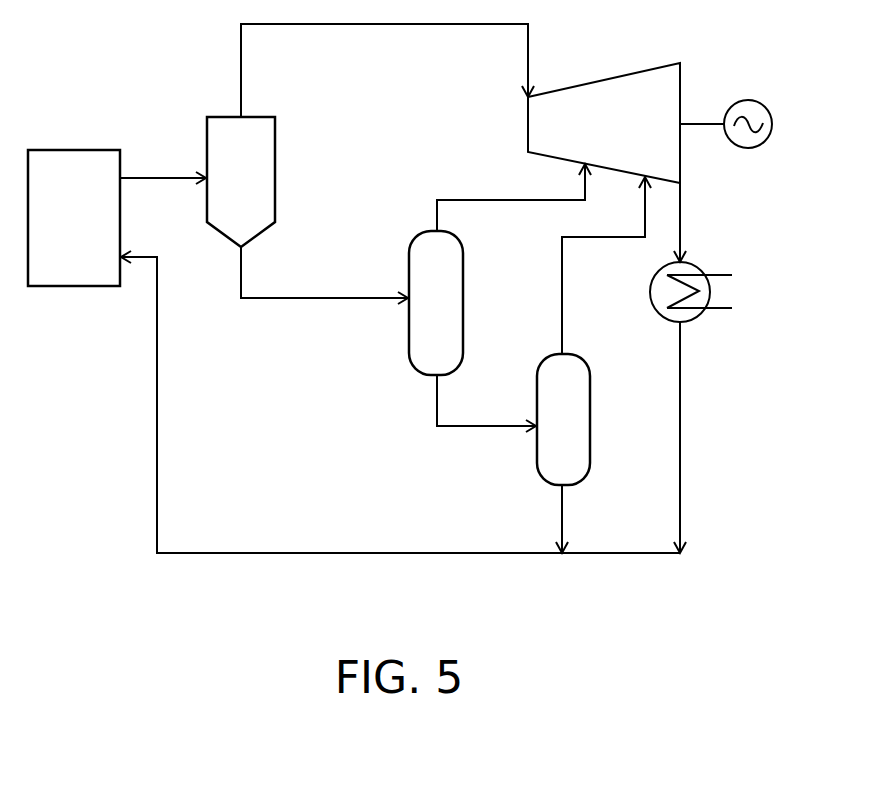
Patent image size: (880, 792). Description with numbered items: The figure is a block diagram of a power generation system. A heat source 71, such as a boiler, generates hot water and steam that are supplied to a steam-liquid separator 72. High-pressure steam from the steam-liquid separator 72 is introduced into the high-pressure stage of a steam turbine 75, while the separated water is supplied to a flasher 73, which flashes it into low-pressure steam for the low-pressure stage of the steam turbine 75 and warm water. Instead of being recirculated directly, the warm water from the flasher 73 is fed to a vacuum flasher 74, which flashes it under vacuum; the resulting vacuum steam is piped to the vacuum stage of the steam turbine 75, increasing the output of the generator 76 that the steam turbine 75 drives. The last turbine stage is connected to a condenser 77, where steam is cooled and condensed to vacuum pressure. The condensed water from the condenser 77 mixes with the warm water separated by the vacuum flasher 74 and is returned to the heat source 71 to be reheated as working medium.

The heat source 71 is at (70, 150).
The steam-liquid separator 72 is at (276, 143).
The flasher 73 is at (409, 335).
The vacuum flasher 74 is at (590, 404).
The steam turbine 75 is at (607, 79).
The generator 76 is at (746, 100).
The condenser 77 is at (701, 314).